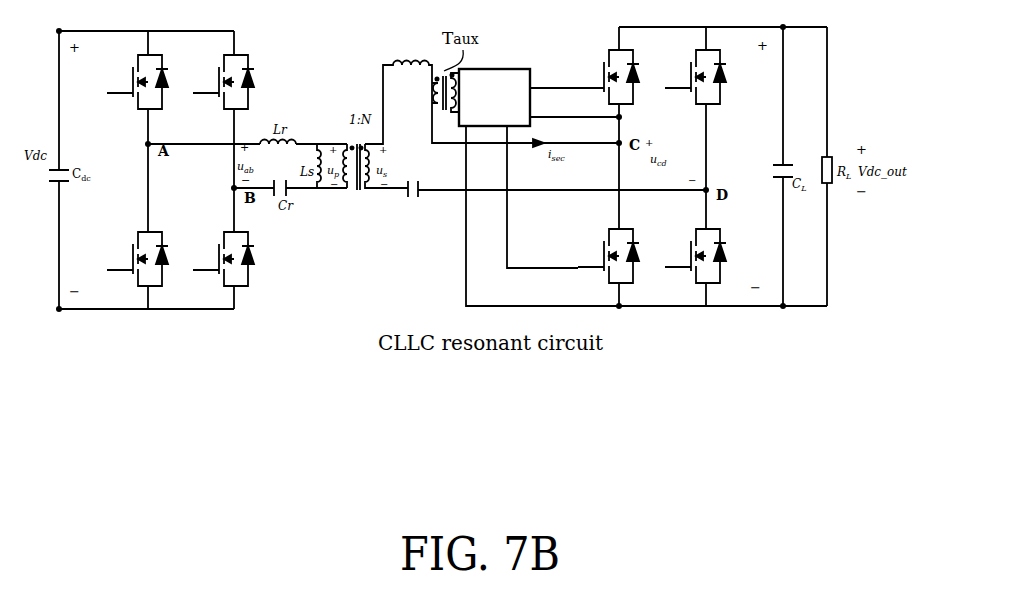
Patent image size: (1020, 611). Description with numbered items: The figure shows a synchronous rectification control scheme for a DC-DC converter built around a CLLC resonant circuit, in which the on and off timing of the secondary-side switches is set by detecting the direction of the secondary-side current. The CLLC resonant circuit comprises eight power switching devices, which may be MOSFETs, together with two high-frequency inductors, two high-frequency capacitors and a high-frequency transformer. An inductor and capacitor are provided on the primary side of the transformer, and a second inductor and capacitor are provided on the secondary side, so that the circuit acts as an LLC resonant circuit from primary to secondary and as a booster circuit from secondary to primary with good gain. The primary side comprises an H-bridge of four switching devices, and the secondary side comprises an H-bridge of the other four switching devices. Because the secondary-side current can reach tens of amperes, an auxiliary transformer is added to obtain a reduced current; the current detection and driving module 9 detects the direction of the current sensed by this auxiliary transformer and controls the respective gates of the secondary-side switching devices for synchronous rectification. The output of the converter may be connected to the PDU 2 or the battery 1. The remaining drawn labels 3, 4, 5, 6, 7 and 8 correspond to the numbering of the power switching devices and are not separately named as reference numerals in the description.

The battery 1 is at (137, 74).
The PDU 2 is at (137, 252).
The switch S3 3 is at (223, 74).
The switch S4 4 is at (223, 252).
The switch S5 5 is at (608, 69).
The switch S6 6 is at (608, 248).
The switch S7 7 is at (695, 69).
The switch S8 8 is at (695, 248).
The current detection and driving module 9 is at (513, 69).